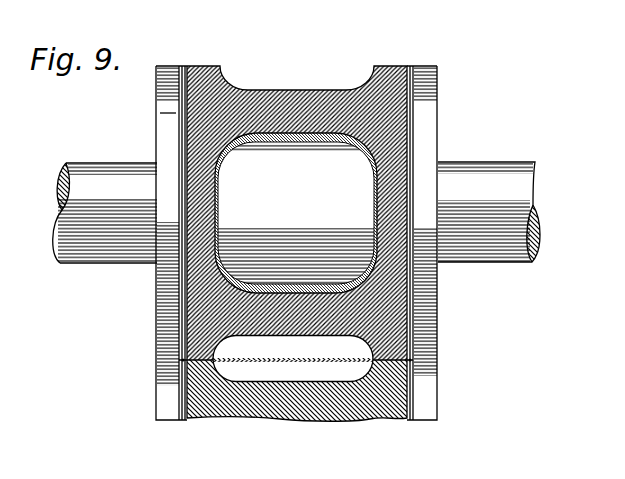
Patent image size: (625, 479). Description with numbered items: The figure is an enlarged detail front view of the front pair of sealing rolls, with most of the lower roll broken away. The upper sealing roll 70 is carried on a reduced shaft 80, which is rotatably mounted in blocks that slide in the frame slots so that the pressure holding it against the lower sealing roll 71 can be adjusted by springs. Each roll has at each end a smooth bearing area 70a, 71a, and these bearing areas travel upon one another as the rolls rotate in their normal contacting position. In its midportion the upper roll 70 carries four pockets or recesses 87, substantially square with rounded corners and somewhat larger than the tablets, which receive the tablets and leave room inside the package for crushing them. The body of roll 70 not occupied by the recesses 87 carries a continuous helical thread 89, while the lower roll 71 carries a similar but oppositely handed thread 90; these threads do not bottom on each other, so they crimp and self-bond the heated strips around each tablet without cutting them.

The upper sealing roll 70 is at (384, 64).
The smooth bearing area 70a is at (428, 78).
The lower sealing roll 71 is at (343, 419).
The smooth bearing area 71a is at (427, 381).
The reduced shaft 80 is at (490, 172).
The pocket or recess 87 is at (290, 90).
The helical thread 89 is at (197, 77).
The helical thread 90 is at (208, 406).